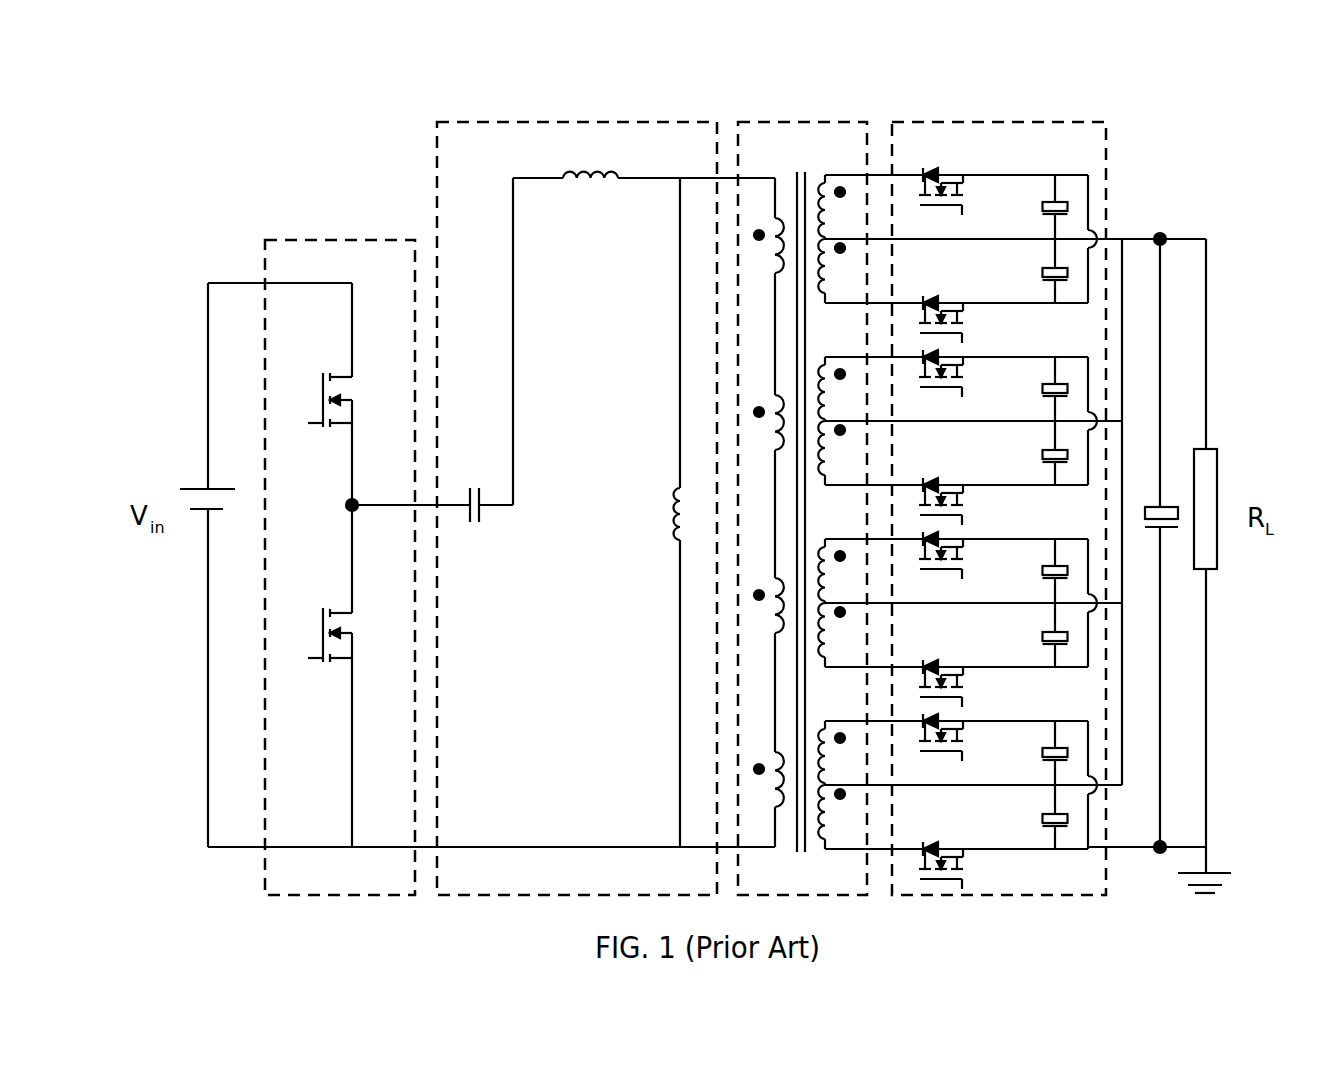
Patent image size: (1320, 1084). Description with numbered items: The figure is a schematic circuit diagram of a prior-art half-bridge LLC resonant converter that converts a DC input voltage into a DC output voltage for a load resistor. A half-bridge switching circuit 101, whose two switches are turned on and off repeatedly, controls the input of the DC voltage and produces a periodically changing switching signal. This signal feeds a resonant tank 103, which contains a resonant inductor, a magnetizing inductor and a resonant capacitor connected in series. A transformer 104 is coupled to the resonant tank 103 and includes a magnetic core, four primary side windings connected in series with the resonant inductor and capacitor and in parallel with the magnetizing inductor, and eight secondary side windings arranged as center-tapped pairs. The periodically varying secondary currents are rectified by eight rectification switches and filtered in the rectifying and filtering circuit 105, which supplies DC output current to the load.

The half-bridge switching circuit 101 is at (328, 238).
The resonant tank 103 is at (568, 122).
The transformer 104 is at (790, 120).
The rectifying and filtering circuit 105 is at (993, 120).